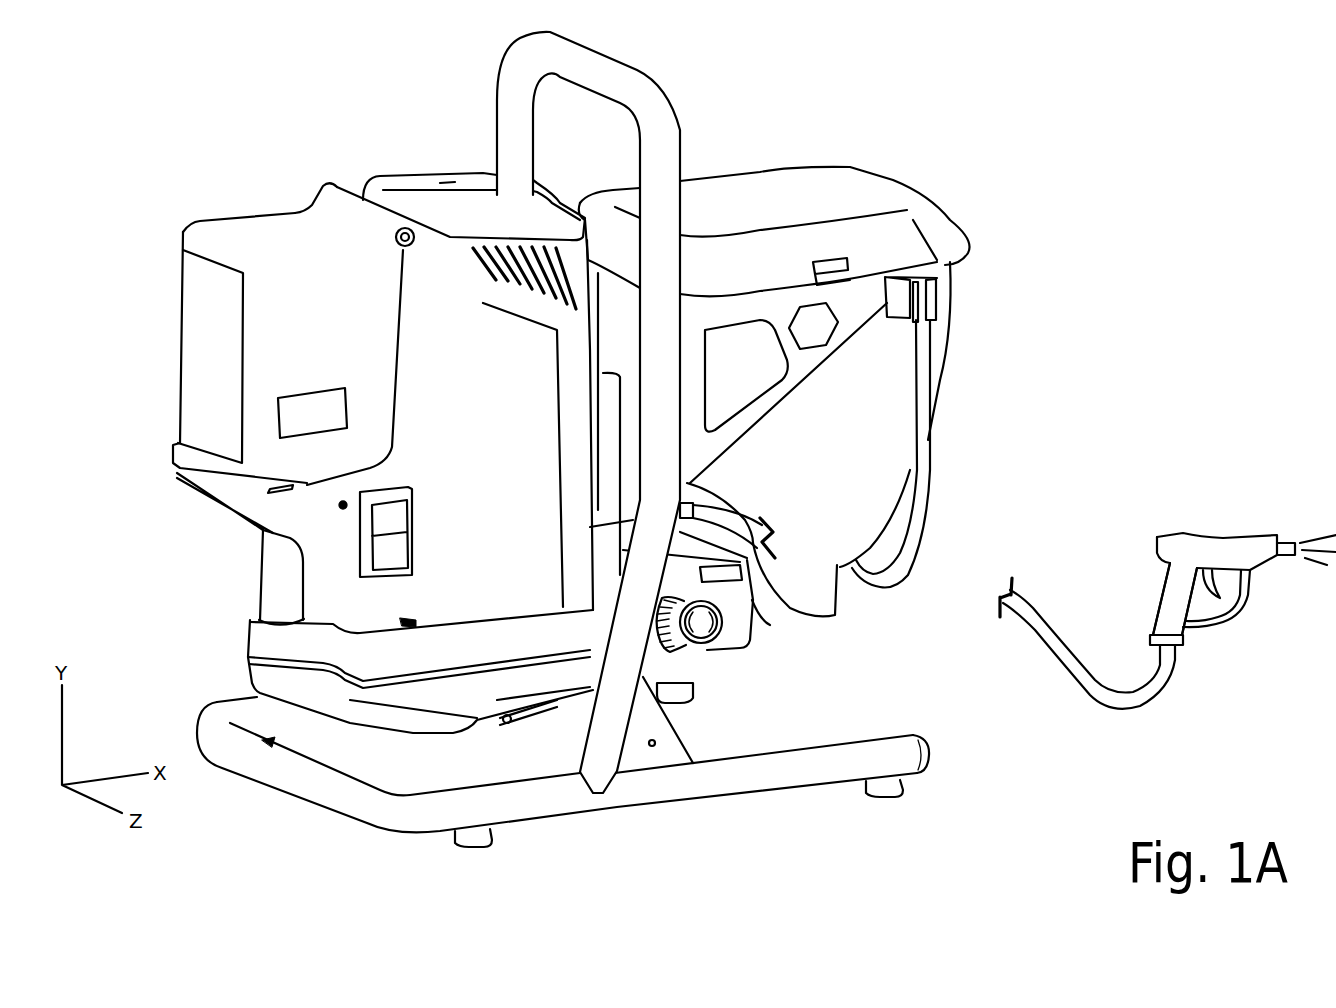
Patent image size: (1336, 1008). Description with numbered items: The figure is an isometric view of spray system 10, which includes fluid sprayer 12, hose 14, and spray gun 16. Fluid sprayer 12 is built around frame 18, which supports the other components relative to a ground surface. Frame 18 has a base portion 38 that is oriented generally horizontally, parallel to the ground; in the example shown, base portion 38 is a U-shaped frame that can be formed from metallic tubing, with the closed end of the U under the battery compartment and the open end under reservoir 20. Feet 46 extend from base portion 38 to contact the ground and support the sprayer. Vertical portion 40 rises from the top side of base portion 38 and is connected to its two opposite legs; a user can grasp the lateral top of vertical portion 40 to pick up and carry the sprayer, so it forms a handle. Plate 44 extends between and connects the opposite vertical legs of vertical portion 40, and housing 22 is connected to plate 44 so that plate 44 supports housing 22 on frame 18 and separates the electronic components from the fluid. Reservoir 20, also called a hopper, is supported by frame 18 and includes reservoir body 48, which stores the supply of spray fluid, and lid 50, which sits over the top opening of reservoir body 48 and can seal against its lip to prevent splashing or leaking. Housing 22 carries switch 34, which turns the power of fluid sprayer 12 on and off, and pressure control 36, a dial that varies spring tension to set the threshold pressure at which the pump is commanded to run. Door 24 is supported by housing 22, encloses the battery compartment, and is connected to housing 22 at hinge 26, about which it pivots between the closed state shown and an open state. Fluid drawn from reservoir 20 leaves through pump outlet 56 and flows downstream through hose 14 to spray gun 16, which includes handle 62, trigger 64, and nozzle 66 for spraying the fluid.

The spray system 10 is at (270, 166).
The fluid sprayer 12 is at (411, 165).
The hose 14 is at (772, 593).
The spray gun 16 is at (1187, 529).
The frame 18 is at (573, 773).
The reservoir 20 is at (958, 284).
The housing 22 is at (378, 176).
The door 24 is at (213, 217).
The hinge 26 is at (334, 182).
The switch 34 is at (383, 527).
The pressure control 36 is at (717, 645).
The base portion 38 is at (733, 770).
The vertical portion 40 is at (657, 137).
The plate 44 is at (757, 603).
The feet 46 is at (903, 790).
The reservoir body 48 is at (937, 390).
The lid 50 is at (817, 187).
The pump outlet 56 is at (690, 491).
The handle 62 is at (1170, 607).
The trigger 64 is at (1240, 570).
The nozzle 66 is at (1288, 535).